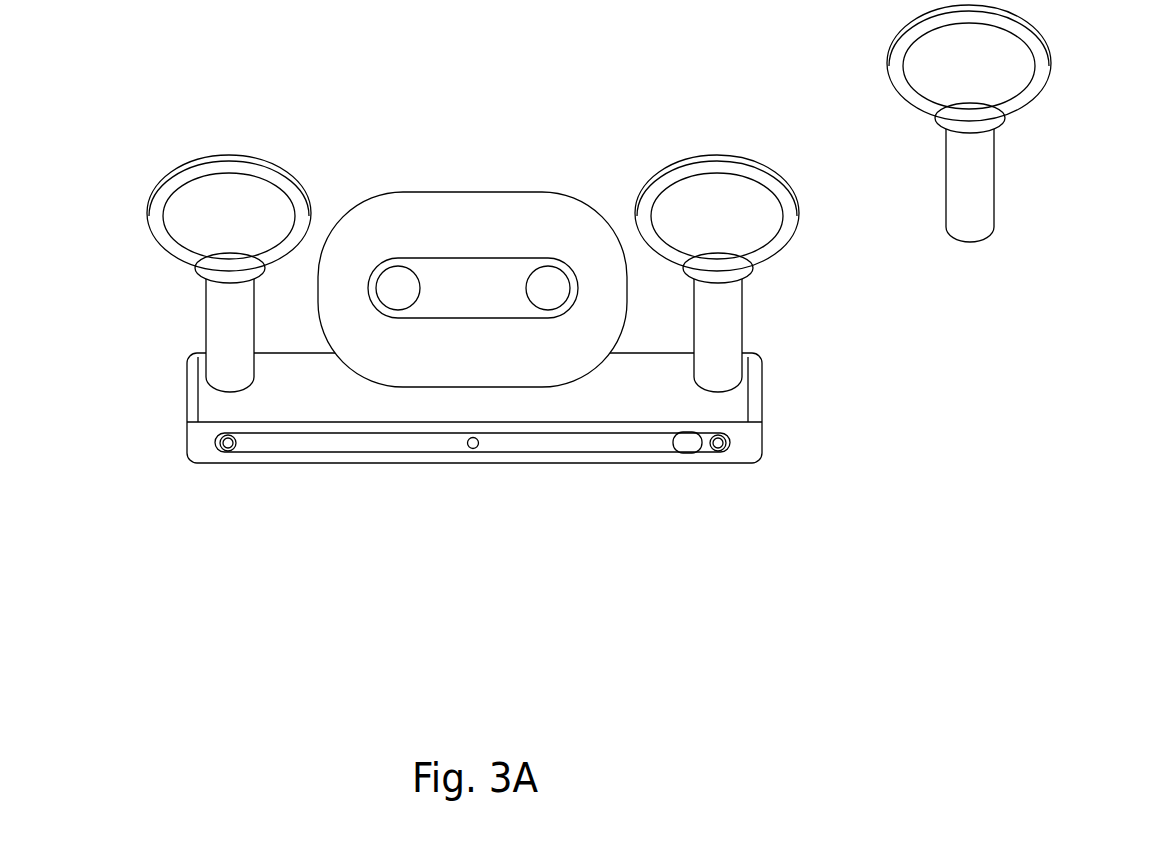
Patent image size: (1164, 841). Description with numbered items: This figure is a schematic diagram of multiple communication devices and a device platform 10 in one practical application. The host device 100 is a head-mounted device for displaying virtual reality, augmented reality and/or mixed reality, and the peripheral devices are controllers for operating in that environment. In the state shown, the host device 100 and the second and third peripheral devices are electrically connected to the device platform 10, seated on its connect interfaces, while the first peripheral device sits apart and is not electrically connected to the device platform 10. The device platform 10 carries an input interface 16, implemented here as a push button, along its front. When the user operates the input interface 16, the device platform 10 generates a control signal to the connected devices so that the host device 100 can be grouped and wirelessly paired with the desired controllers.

The device platform 10 is at (358, 455).
The input interface 16 is at (687, 451).
The host device 100 is at (412, 203).